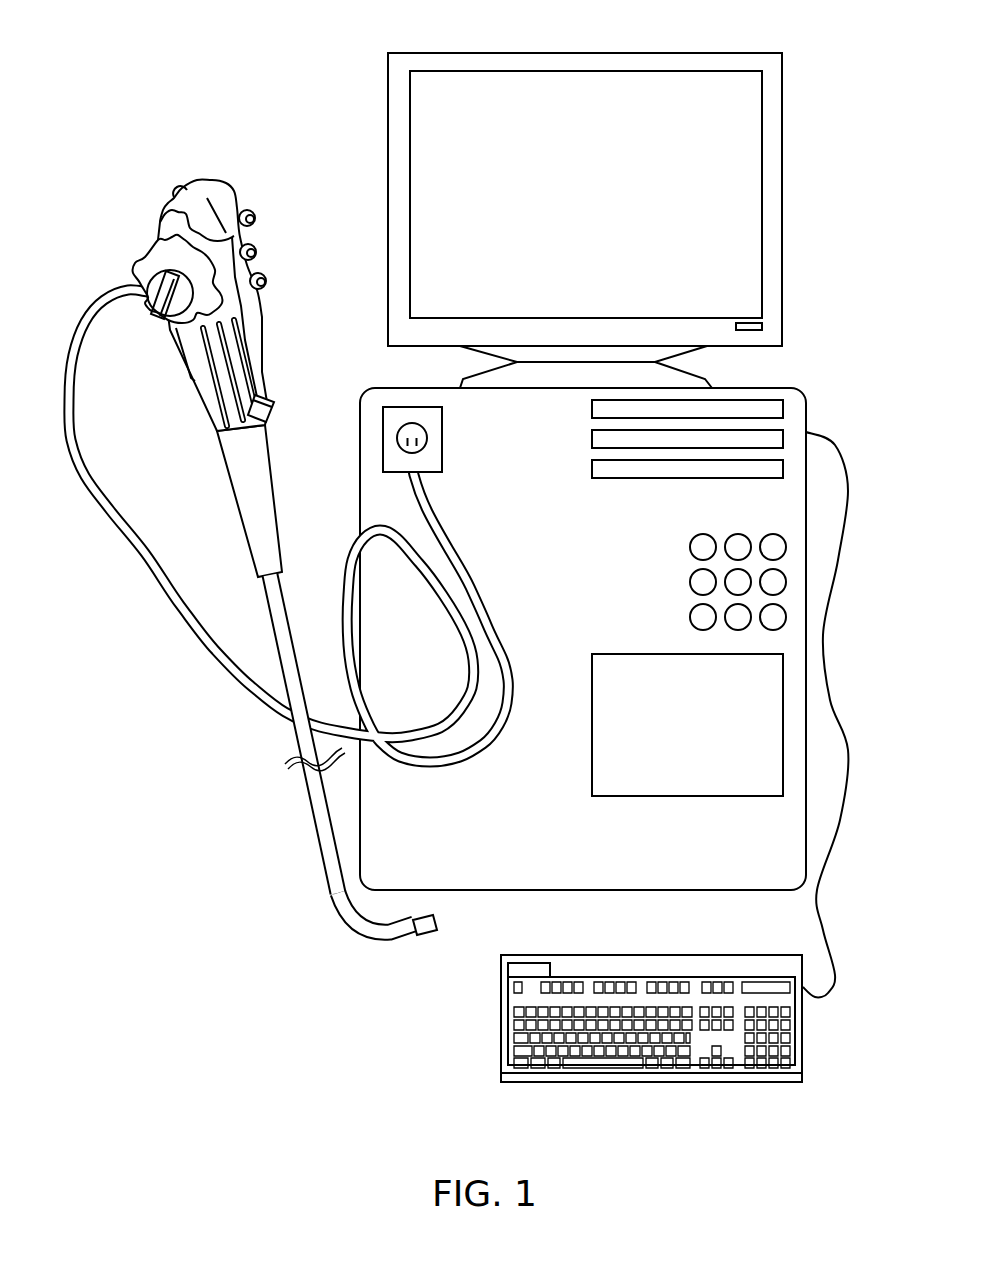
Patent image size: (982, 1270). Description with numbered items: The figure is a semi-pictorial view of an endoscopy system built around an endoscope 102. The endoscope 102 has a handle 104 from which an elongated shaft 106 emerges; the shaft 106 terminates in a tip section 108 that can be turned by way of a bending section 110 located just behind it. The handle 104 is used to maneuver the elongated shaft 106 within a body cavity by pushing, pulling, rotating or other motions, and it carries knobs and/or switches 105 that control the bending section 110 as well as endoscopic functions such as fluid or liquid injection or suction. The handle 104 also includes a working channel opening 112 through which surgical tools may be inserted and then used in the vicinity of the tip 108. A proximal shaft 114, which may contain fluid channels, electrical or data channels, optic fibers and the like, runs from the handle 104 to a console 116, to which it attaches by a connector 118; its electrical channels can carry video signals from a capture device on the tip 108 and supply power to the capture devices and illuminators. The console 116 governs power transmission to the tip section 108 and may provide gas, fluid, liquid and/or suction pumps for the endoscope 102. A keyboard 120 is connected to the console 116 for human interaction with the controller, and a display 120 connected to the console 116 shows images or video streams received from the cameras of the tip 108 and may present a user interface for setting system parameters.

The endoscope 102 is at (280, 565).
The handle 104 is at (243, 170).
The knobs and/or switches 105 is at (256, 204).
The elongated shaft 106 is at (312, 805).
The tip section 108 is at (432, 918).
The bending section 110 is at (401, 961).
The working channel opening 112 is at (270, 409).
The proximal shaft 114 is at (132, 543).
The console 116 is at (362, 396).
The connector 118 is at (428, 434).
The keyboard / display 120 is at (577, 53).